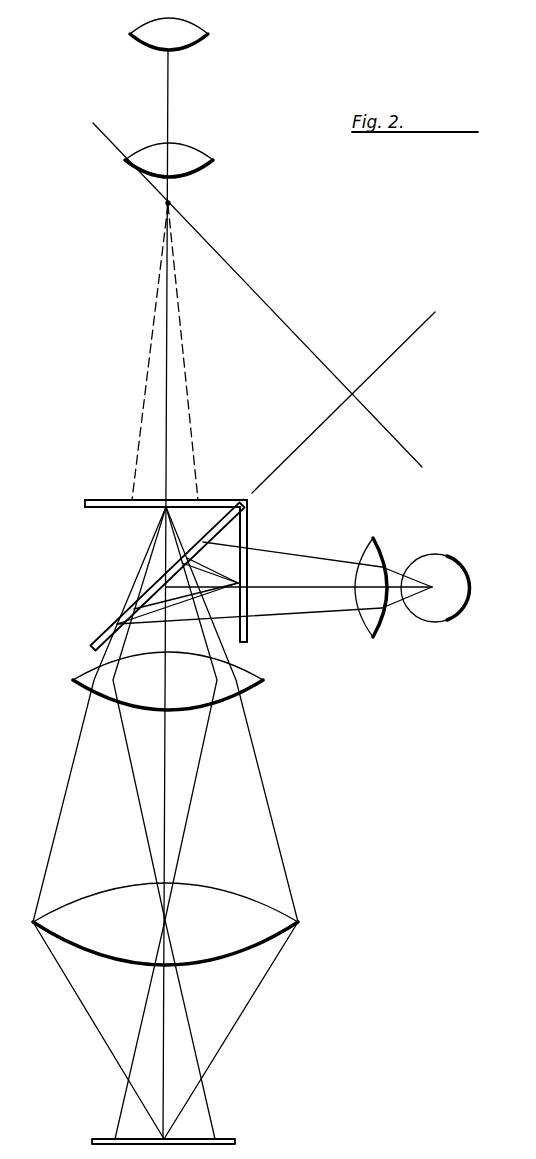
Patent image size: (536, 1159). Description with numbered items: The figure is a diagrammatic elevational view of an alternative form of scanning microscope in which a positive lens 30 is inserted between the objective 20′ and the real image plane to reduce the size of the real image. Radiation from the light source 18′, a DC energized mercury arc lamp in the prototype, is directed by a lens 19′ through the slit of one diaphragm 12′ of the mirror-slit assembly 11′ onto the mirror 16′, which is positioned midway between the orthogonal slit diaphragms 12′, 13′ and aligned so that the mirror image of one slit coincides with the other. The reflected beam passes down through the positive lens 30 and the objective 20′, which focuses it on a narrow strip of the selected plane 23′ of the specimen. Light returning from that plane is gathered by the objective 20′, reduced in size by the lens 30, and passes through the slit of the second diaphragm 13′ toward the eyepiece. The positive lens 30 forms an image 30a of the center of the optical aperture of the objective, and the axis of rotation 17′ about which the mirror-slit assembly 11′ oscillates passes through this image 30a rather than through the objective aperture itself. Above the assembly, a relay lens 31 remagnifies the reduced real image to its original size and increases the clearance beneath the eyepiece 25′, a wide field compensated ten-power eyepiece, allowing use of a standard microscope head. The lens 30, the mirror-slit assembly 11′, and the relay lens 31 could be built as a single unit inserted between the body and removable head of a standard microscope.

The eyepiece 25′ is at (136, 43).
The relay lens 31 is at (125, 163).
The image of the center of the optical aperture of the objective 30a is at (173, 203).
The axis of rotation 17′ is at (272, 308).
The mirror-slit assembly 11′ is at (247, 513).
The slit diaphragm 13′ is at (215, 499).
The slit diaphragm 12′ is at (248, 622).
The mirror 16′ is at (102, 636).
The positive lens 30 is at (263, 680).
The lens 19′ is at (382, 542).
The light source 18′ is at (463, 558).
The objective 20′ is at (298, 923).
The selected plane 23′ is at (236, 1140).